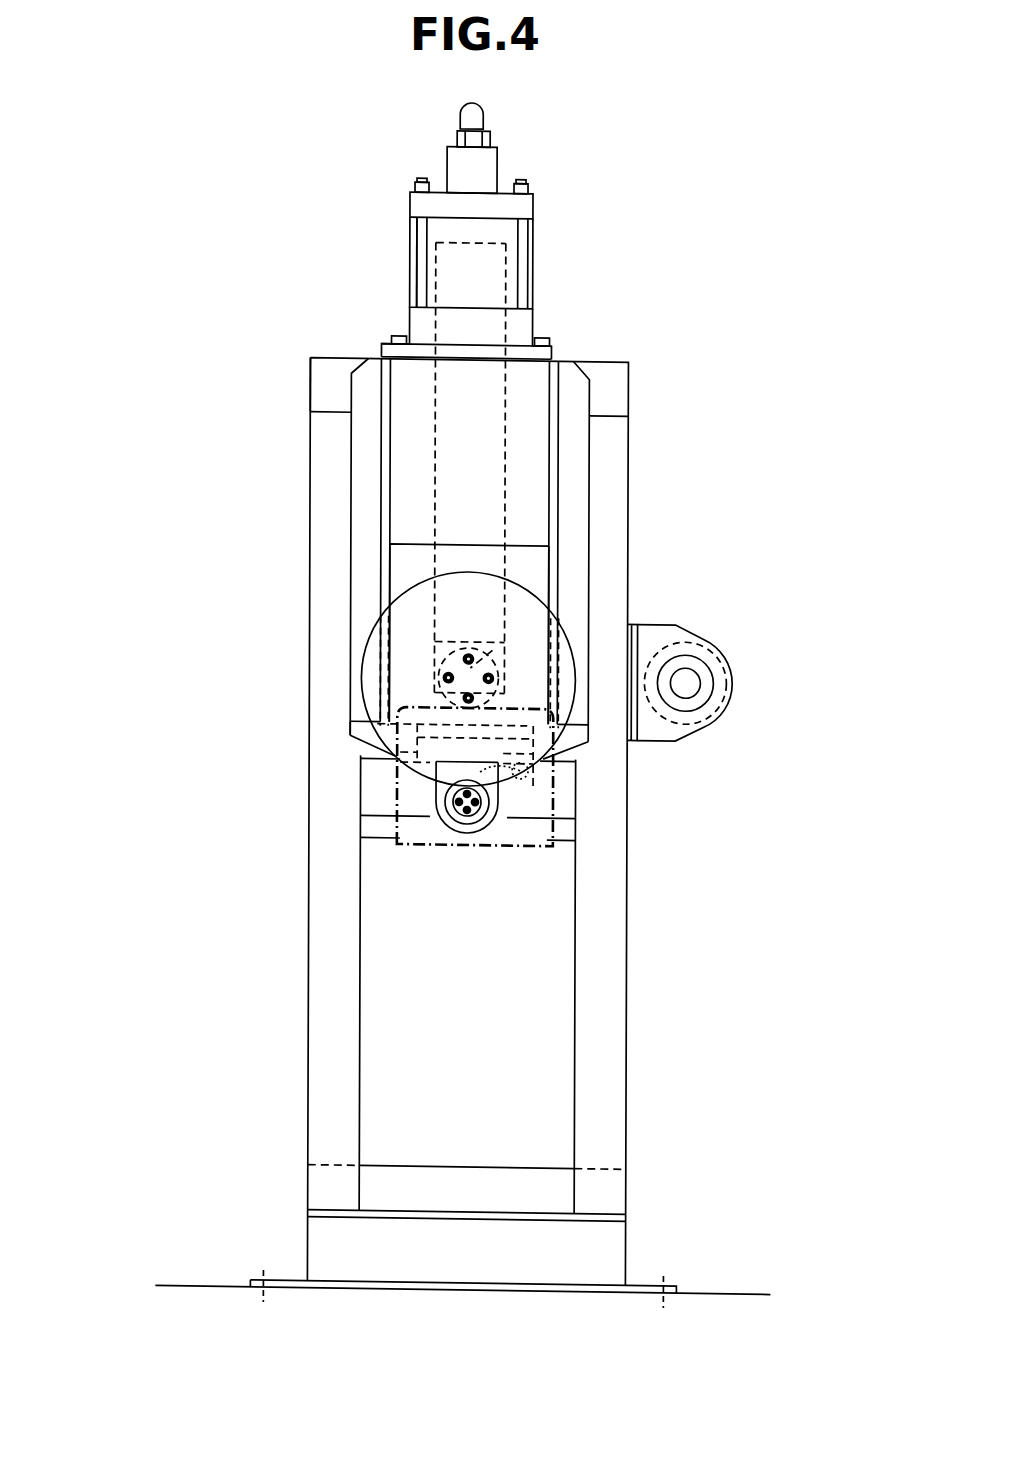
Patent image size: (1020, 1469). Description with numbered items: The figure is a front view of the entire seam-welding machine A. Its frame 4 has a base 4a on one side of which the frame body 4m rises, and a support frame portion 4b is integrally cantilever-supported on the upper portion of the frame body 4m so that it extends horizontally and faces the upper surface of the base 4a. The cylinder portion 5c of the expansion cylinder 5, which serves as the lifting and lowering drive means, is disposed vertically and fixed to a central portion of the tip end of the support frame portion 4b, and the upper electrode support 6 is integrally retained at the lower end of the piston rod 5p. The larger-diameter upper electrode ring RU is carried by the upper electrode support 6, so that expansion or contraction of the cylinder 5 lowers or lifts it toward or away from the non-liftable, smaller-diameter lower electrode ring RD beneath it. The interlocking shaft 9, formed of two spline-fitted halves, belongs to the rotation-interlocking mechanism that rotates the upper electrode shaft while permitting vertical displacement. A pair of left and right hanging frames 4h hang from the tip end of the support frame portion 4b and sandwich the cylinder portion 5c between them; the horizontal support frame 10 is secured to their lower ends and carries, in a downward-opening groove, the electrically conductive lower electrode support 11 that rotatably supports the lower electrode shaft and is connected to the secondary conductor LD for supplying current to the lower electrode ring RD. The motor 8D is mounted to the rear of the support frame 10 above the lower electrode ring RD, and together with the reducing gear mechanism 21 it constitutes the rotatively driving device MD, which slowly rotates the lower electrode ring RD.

The welding machine A is at (282, 383).
The frame 4 is at (630, 397).
The base 4a is at (480, 1268).
The support frame portion 4b is at (387, 357).
The hanging frames 4h is at (360, 482).
The frame body 4m is at (620, 563).
The expansion cylinder 5 is at (405, 258).
The cylinder portion 5c is at (530, 283).
The piston rod 5p is at (440, 553).
The upper electrode support 6 is at (553, 718).
The interlocking shaft 9 is at (492, 650).
The support frame 10 is at (347, 737).
The lower electrode support 11 is at (477, 833).
The reducing gear mechanism 21 is at (508, 790).
The upper electrode ring RU is at (363, 687).
The lower electrode ring RD is at (457, 813).
The secondary conductor LD is at (448, 673).
The motor 8D is at (540, 770).
The rotatively driving device for lower electrode MD is at (553, 790).